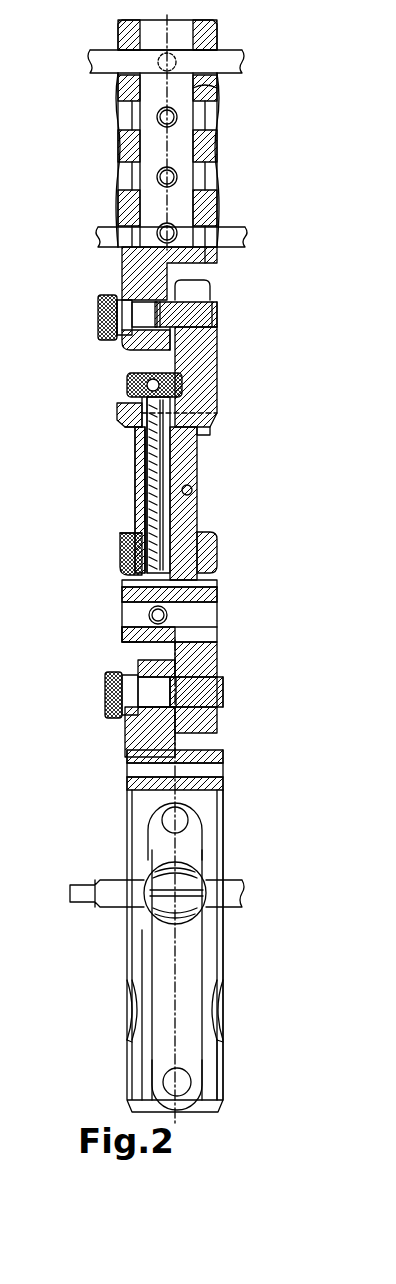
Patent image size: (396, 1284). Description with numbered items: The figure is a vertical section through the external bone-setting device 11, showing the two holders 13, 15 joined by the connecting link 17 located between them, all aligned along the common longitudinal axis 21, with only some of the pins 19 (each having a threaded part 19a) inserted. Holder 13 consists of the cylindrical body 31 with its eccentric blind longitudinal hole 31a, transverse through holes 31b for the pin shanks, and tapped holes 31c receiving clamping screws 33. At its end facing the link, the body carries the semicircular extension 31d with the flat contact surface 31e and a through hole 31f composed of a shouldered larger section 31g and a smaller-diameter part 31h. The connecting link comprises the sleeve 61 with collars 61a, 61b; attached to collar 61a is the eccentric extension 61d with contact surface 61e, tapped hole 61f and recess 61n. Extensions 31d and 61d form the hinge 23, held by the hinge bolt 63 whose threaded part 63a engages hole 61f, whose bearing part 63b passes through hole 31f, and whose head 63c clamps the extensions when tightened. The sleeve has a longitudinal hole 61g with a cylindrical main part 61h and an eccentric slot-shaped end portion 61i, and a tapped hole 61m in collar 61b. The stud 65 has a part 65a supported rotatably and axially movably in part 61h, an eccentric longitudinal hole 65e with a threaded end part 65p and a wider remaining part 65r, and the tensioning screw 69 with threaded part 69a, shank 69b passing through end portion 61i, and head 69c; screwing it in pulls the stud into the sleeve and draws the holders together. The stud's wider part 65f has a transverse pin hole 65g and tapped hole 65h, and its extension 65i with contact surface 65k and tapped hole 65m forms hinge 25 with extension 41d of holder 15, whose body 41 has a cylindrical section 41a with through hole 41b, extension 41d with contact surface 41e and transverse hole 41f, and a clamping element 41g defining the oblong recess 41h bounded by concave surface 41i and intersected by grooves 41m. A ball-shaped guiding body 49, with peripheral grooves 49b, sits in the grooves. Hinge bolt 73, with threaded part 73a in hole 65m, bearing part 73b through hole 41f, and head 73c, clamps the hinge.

The external bone-setting device 11 is at (240, 60).
The holder 13 is at (112, 150).
The holder 15 is at (122, 778).
The connecting link 17 is at (125, 470).
The pins 19 is at (112, 75).
The threaded part 19a is at (122, 95).
The longitudinal axis 21 is at (150, 22).
The hinge 23 is at (222, 305).
The hinge 25 is at (224, 690).
The body 31 is at (118, 128).
The blind longitudinal hole 31a is at (210, 86).
The transverse through hole 31b is at (213, 118).
The tapped hole 31c is at (162, 180).
The extension 31d is at (120, 282).
The contact surface 31e is at (217, 350).
The through hole 31f is at (117, 318).
The shouldered larger section 31g is at (98, 302).
The smaller-diameter part 31h is at (118, 330).
The clamping screw 33 is at (172, 46).
The body 41 is at (224, 800).
The cylindrical section 41a is at (224, 756).
The through hole 41b is at (218, 770).
The extension 41d is at (140, 665).
The contact surface 41e is at (218, 656).
The transverse hole 41f is at (128, 712).
The clamping element 41g is at (224, 830).
The oblong recess 41h is at (205, 956).
The internal concavely curved surface 41i is at (198, 968).
The grooves 41m is at (220, 1032).
The guiding body 49 is at (152, 884).
The grooves 49b is at (118, 884).
The sleeve 61 is at (200, 520).
The collar 61a is at (120, 413).
The collar 61b is at (120, 550).
The extension 61d is at (217, 386).
The contact surface 61e is at (135, 346).
The tapped hole 61f is at (218, 320).
The longitudinal hole 61g is at (200, 436).
The main part 61h is at (192, 491).
The end portion 61i is at (176, 413).
The tapped hole 61m is at (138, 538).
The recess 61n is at (127, 383).
The hinge bolt 63 is at (122, 268).
The threaded part 63a is at (212, 290).
The bearing part 63b is at (218, 252).
The head 63c is at (122, 340).
The stud 65 is at (220, 578).
The stud part 65a is at (190, 466).
The longitudinal hole 65e is at (155, 580).
The cylindrical wider part 65f is at (122, 636).
The transverse hole 65g is at (128, 620).
The tapped hole 65h is at (217, 612).
The extension 65i is at (218, 723).
The contact surface 65k is at (140, 732).
The tapped hole 65m is at (218, 700).
The end part 65p is at (140, 455).
The remaining part 65r is at (172, 560).
The tensioning screw 69 is at (138, 440).
The threaded part 69a is at (140, 486).
The shank 69b is at (130, 426).
The head 69c is at (120, 400).
The hinge bolt 73 is at (105, 688).
The threaded part 73a is at (212, 676).
The bearing part 73b is at (148, 732).
The head 73c is at (130, 700).